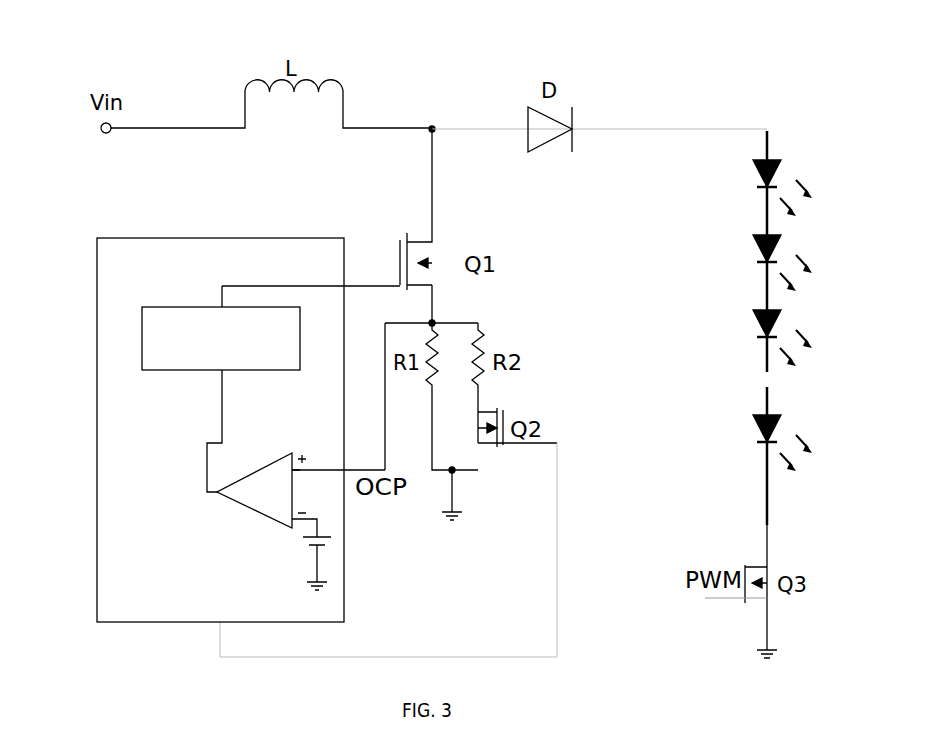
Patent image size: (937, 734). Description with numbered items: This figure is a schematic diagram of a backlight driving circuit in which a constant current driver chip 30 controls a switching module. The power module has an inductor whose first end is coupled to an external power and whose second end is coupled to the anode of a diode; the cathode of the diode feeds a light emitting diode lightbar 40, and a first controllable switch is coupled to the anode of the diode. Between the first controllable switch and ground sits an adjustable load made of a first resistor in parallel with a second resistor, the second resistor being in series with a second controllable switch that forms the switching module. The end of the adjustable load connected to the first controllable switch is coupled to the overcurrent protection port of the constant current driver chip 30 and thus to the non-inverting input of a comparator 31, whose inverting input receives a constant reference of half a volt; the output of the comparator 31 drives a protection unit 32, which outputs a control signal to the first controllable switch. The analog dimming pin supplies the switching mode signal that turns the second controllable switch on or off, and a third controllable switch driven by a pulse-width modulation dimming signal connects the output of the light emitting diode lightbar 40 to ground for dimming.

The constant current driver chip 30 is at (262, 238).
The comparator 31 is at (253, 510).
The protection unit 32 is at (178, 303).
The light emitting diode lightbar 40 is at (752, 318).